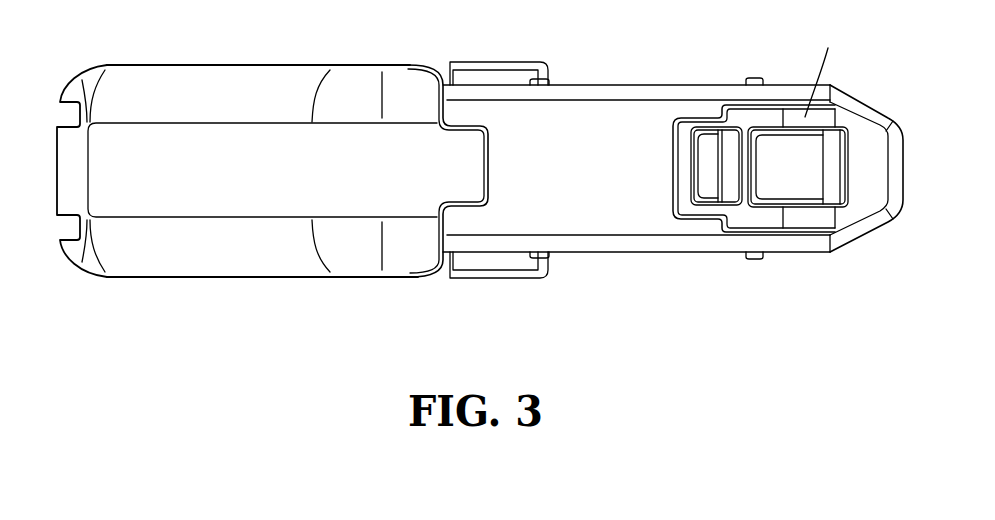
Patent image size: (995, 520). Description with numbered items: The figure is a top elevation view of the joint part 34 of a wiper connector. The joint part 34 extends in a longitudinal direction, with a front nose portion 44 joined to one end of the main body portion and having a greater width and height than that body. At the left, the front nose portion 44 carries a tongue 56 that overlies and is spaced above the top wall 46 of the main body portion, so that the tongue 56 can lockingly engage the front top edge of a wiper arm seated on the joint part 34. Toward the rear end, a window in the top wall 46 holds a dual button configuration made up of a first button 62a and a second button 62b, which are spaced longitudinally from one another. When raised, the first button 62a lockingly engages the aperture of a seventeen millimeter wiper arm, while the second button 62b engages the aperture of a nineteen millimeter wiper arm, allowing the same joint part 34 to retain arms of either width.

The joint part 34 is at (100, 315).
The front nose portion 44 is at (172, 279).
The top wall 46 is at (612, 140).
The tongue 56 is at (457, 177).
The first button 62a is at (720, 174).
The second button 62b is at (812, 163).